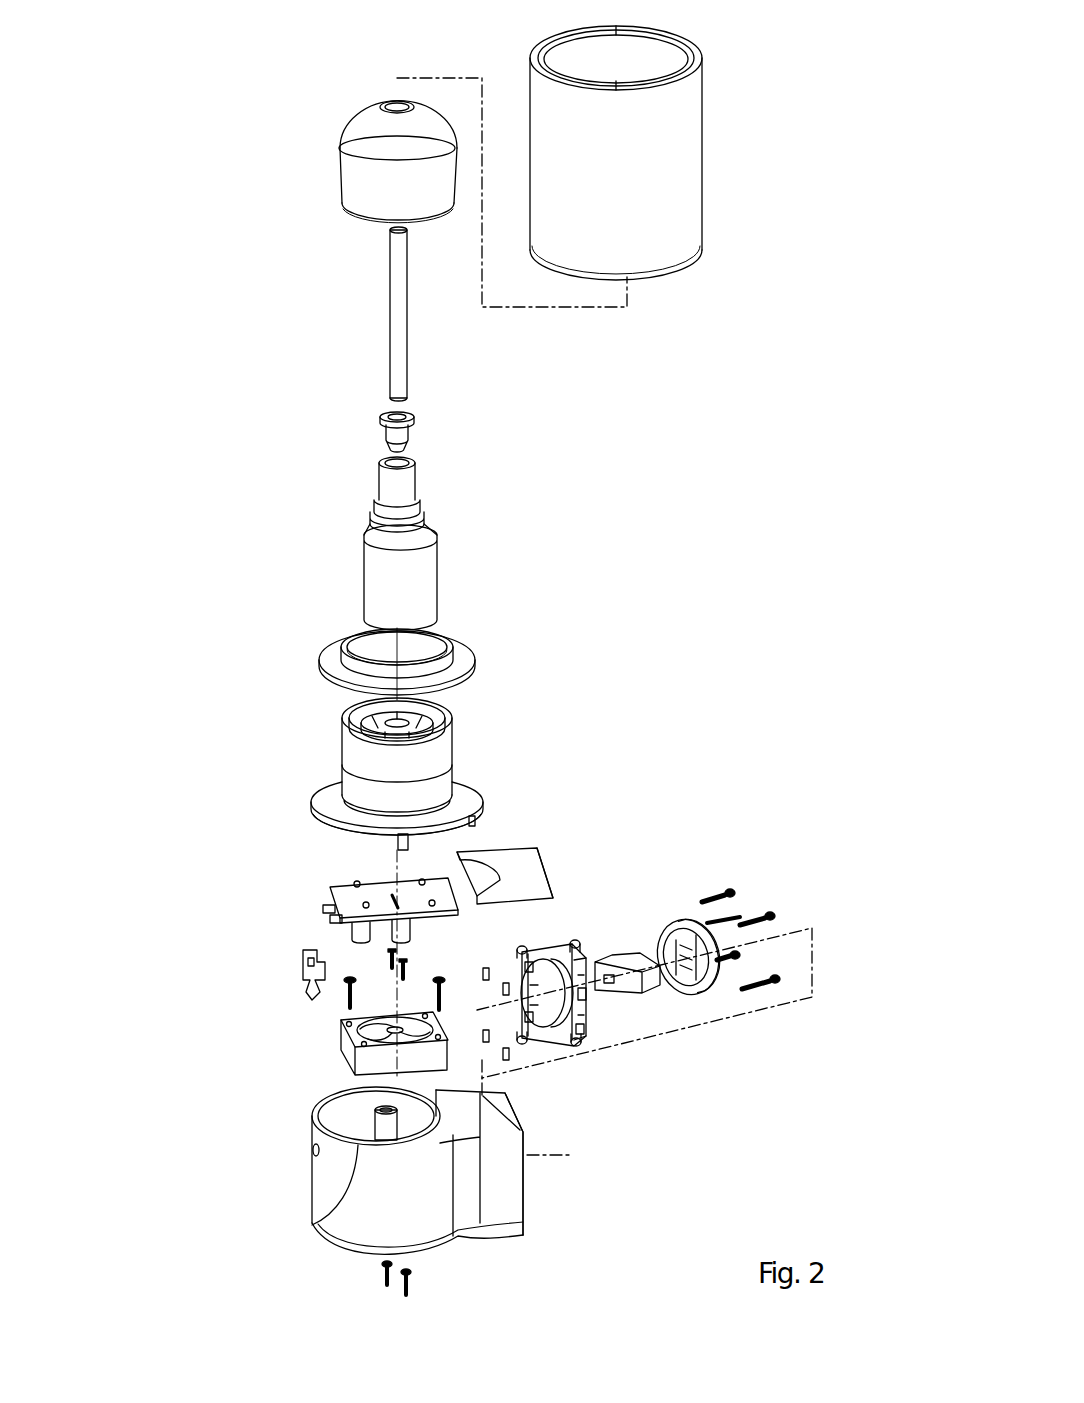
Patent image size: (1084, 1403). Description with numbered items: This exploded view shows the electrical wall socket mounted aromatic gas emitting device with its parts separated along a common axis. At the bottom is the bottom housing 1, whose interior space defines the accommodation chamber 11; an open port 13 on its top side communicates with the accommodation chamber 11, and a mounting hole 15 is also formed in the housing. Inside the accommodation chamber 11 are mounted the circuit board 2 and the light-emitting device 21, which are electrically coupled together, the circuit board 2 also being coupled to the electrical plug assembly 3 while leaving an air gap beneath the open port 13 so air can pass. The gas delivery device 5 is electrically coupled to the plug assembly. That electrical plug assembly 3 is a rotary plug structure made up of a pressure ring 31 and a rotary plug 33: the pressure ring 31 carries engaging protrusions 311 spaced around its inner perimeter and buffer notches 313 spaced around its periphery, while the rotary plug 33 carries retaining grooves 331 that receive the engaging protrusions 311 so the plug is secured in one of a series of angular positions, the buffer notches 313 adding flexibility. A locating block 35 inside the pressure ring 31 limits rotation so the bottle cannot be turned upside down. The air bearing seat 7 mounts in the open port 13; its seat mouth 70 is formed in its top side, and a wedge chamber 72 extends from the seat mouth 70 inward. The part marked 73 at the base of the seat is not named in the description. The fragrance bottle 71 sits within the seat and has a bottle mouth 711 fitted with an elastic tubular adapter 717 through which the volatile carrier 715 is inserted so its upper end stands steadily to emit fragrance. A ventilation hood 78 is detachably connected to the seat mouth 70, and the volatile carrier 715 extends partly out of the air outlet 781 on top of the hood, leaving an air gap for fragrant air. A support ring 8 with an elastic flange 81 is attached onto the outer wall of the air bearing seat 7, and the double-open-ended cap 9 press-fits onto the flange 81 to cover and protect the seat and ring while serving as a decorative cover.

The bottom housing 1 is at (312, 1177).
The accommodation chamber 11 is at (350, 1120).
The open port 13 is at (312, 1223).
The mounting hole 15 is at (532, 1118).
The circuit board 2 is at (330, 892).
The light-emitting device 21 is at (357, 884).
The electrical plug assembly 3 is at (757, 810).
The pressure ring 31 is at (548, 955).
The engaging protrusions 311 is at (512, 973).
The buffer notches 313 is at (577, 997).
The rotary plug 33 is at (680, 918).
The retaining grooves 331 is at (648, 943).
The locating block 35 is at (577, 1030).
The gas delivery device 5 is at (342, 1035).
The air bearing seat 7 is at (358, 750).
The seat mouth 70 is at (362, 698).
The wedge chamber 72 is at (430, 710).
The base flange 73 is at (478, 800).
The fragrance bottle 71 is at (380, 553).
The bottle mouth 711 is at (420, 453).
The volatile carrier 715 is at (398, 303).
The tubular adapter 717 is at (385, 417).
The support ring 8 is at (368, 640).
The flange 81 is at (470, 658).
The ventilation hood 78 is at (358, 113).
The air outlet 781 is at (388, 98).
The cap 9 is at (685, 145).